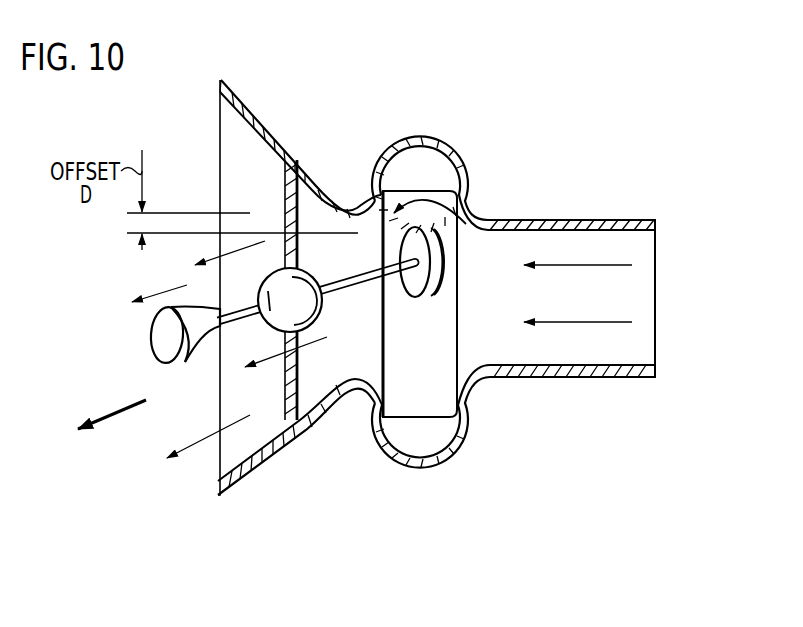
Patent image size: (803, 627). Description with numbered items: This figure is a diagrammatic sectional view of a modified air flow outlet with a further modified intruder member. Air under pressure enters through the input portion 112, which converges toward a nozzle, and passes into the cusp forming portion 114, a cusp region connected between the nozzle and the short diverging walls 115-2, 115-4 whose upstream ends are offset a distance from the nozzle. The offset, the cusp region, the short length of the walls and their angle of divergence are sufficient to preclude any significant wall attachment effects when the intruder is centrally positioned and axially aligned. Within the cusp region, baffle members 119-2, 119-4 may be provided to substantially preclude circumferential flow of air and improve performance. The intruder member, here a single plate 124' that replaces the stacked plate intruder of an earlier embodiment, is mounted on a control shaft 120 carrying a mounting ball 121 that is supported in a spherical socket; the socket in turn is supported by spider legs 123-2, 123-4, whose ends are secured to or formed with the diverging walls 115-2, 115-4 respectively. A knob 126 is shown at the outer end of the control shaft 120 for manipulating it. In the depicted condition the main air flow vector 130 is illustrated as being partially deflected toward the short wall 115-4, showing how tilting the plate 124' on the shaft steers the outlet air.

The input portion 112 is at (615, 220).
The cusp forming portion 114 is at (420, 468).
The diverging wall 115-2 is at (263, 124).
The diverging wall 115-4 is at (241, 488).
The baffle member 119-2 is at (438, 172).
The baffle member 119-4 is at (460, 442).
The control shaft 120 is at (345, 294).
The mounting ball 121 is at (268, 284).
The spider leg 123-2 is at (306, 176).
The spider leg 123-4 is at (309, 424).
The single plate 124' is at (422, 299).
The knob 126 is at (154, 335).
The main air flow vector 130 is at (100, 412).